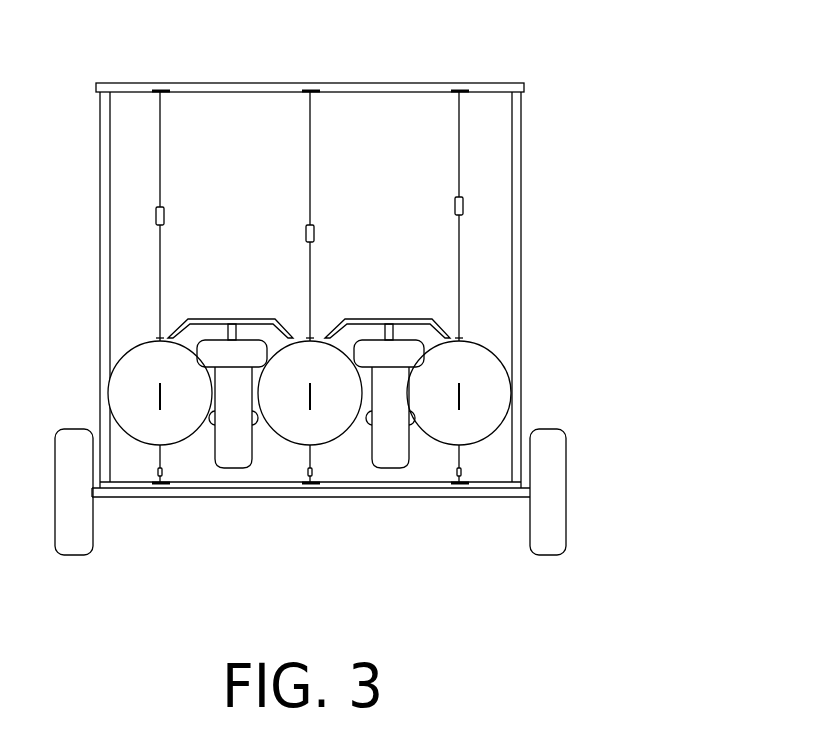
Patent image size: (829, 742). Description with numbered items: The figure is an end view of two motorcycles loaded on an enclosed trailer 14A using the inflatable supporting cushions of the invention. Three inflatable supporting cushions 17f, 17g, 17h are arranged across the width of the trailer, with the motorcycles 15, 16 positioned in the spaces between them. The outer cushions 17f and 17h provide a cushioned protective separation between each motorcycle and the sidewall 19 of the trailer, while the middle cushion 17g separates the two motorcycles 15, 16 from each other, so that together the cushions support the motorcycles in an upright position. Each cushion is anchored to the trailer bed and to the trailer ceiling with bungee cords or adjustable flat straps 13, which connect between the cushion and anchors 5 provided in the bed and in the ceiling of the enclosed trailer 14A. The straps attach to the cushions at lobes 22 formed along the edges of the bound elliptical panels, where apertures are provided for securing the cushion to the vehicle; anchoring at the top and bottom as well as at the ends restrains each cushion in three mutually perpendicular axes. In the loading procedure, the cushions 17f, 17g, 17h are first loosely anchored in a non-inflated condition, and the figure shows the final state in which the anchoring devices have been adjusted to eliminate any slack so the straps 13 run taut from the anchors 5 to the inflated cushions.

The anchors 5 is at (162, 91).
The adjustable flat straps 13 is at (162, 187).
The enclosed trailer 14A is at (623, 218).
The motorcycle 15 is at (239, 290).
The motorcycle 16 is at (398, 290).
The inflatable supporting cushion 17f is at (185, 378).
The inflatable supporting cushion 17g is at (336, 378).
The inflatable supporting cushion 17h is at (484, 378).
The sidewall 19 is at (100, 360).
The lobes 22 is at (160, 340).